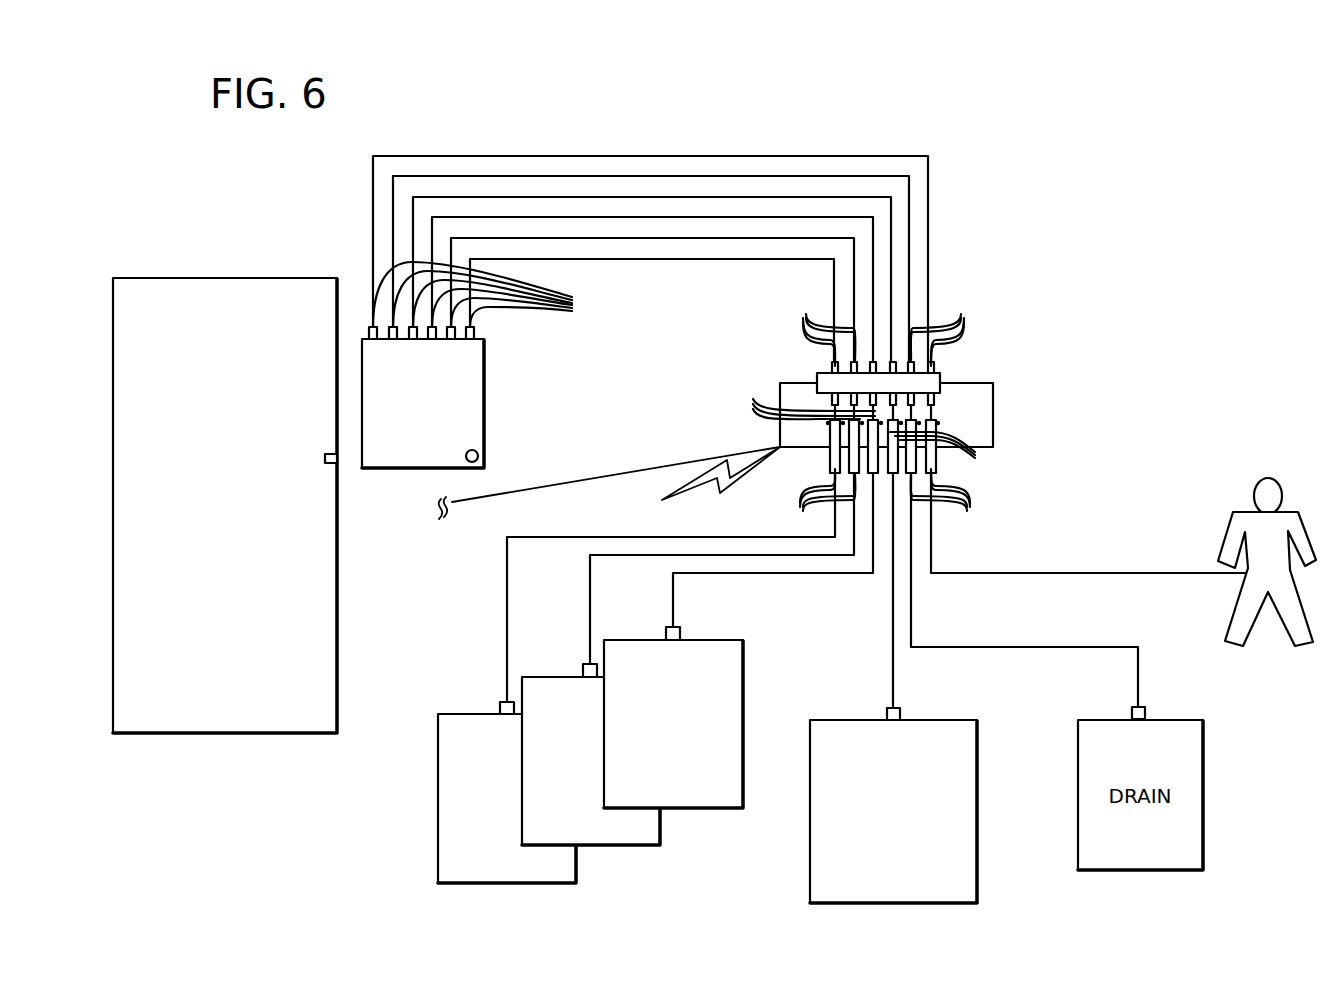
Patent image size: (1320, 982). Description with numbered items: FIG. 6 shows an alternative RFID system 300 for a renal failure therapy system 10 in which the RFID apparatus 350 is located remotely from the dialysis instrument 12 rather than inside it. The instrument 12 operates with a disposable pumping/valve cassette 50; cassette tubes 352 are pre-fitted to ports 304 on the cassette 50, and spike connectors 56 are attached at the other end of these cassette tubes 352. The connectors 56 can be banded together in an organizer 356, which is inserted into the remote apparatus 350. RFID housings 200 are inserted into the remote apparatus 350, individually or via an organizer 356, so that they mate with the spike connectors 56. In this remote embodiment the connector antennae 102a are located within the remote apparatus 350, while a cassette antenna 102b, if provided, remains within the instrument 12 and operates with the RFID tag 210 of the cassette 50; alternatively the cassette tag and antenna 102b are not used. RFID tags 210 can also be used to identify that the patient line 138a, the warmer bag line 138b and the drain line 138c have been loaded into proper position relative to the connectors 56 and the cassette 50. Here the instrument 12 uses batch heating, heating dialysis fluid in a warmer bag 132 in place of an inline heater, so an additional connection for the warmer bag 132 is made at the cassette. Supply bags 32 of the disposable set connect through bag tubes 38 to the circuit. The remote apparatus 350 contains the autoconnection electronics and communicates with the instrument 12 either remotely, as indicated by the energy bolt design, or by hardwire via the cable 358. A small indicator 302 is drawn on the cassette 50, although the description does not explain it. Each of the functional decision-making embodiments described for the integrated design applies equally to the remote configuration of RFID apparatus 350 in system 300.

The renal failure therapy system 10 is at (191, 187).
The dialysis instrument 12 is at (109, 273).
The supply bag 32 is at (466, 816).
The bag tubes 38 is at (673, 604).
The cassette 50 is at (484, 368).
The spike connectors 56 is at (882, 329).
The connector antennae 102a is at (956, 458).
The cassette antenna 102b is at (325, 458).
The warmer bag 132 is at (876, 823).
The patient line 138a is at (1140, 573).
The warmer bag line 138b is at (890, 676).
The drain line 138c is at (1138, 676).
The RFID housings 200 is at (890, 502).
The RFID tags 210 is at (803, 397).
The RFID system 300 is at (897, 113).
The indicator / transmitter 302 is at (480, 454).
The ports 304 is at (496, 294).
The remote RFID apparatus 350 is at (998, 374).
The cassette tubes 352 is at (540, 259).
The organizer 356 is at (817, 374).
The cable 358 is at (468, 502).